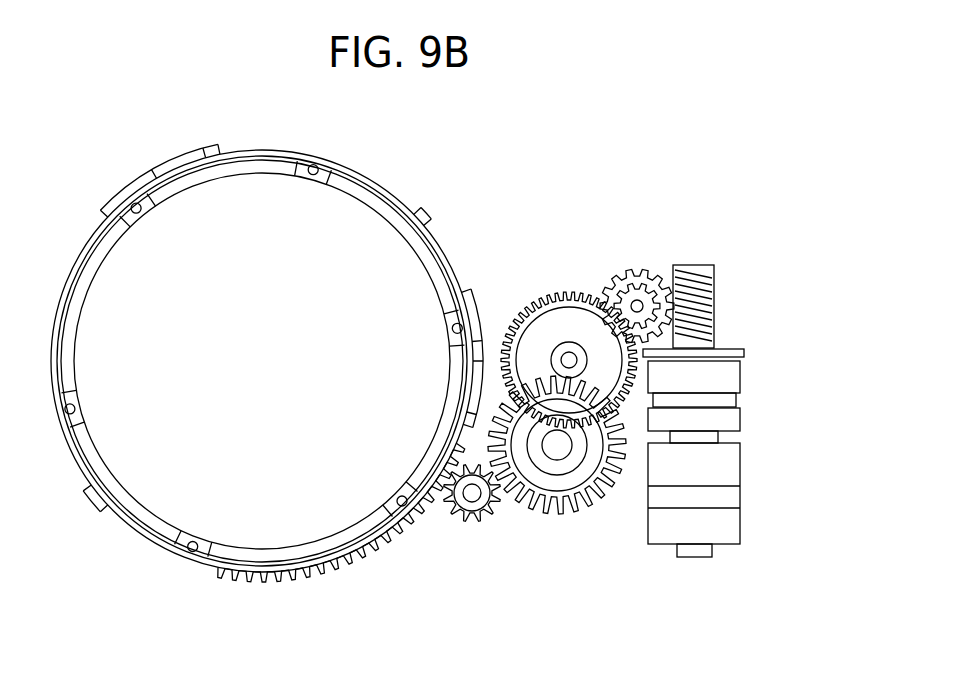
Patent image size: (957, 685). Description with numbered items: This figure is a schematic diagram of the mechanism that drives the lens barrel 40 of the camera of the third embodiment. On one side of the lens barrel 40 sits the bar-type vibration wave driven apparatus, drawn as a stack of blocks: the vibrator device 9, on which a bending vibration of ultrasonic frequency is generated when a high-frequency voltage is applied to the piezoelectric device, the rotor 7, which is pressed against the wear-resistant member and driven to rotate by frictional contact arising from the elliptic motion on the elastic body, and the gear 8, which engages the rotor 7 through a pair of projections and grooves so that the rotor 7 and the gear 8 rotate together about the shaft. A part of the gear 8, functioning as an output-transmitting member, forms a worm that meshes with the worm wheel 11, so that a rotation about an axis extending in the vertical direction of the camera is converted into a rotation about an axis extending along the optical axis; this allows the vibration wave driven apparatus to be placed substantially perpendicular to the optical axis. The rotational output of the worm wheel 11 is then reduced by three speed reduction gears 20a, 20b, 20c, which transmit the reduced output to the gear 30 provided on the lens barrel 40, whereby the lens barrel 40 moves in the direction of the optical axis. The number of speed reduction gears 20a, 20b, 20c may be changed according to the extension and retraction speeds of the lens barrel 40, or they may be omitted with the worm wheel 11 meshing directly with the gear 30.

The lens barrel 40 is at (246, 555).
The gear 30 is at (348, 563).
The speed reduction gear 20a is at (558, 313).
The speed reduction gear 20b is at (553, 490).
The speed reduction gear 20c is at (472, 511).
The worm wheel 11 is at (630, 279).
The gear 8 is at (712, 298).
The rotor 7 is at (732, 380).
The vibrator device 9 is at (732, 463).